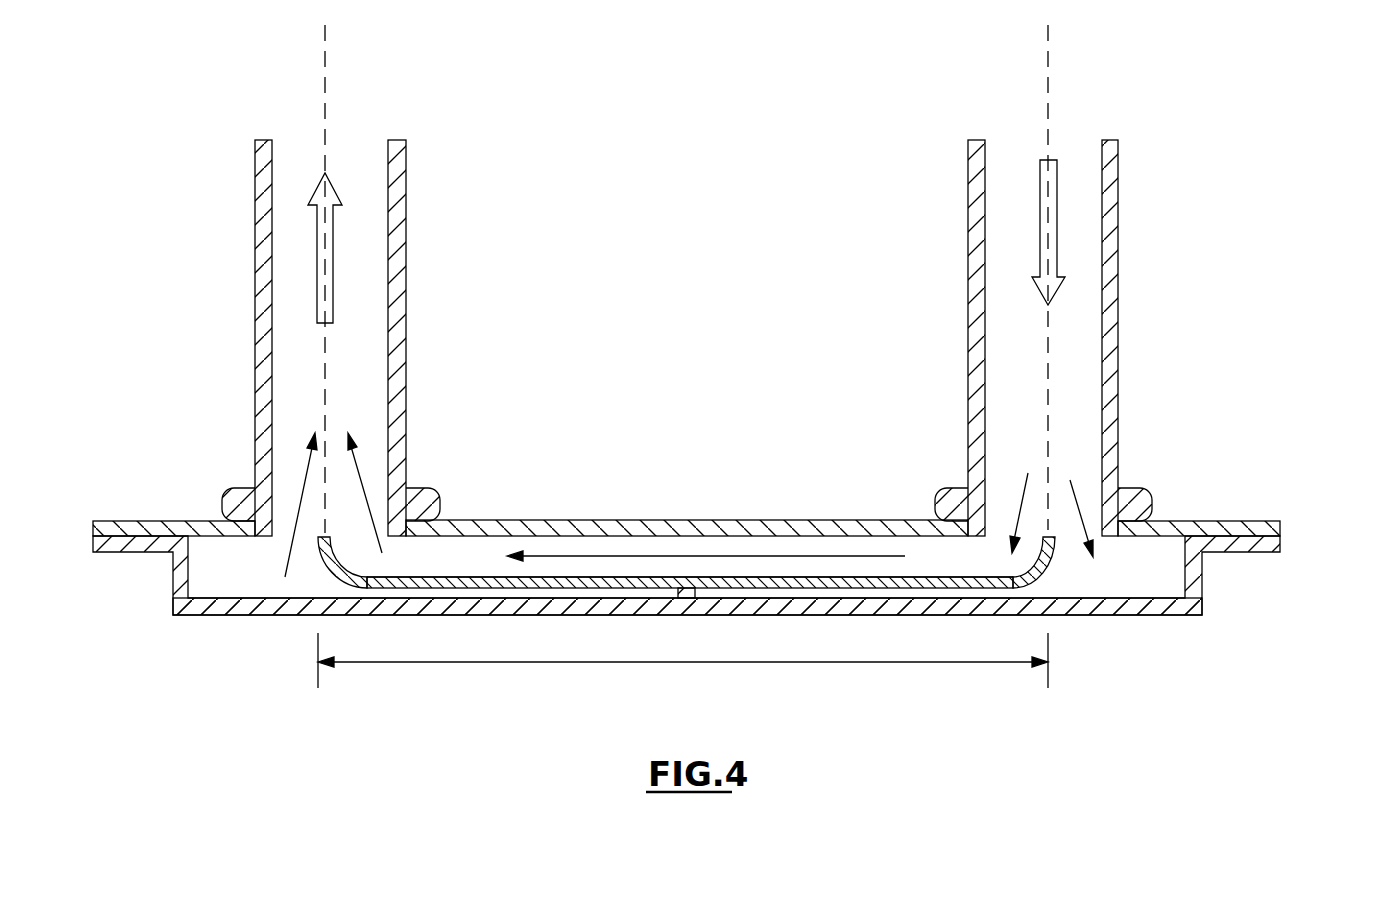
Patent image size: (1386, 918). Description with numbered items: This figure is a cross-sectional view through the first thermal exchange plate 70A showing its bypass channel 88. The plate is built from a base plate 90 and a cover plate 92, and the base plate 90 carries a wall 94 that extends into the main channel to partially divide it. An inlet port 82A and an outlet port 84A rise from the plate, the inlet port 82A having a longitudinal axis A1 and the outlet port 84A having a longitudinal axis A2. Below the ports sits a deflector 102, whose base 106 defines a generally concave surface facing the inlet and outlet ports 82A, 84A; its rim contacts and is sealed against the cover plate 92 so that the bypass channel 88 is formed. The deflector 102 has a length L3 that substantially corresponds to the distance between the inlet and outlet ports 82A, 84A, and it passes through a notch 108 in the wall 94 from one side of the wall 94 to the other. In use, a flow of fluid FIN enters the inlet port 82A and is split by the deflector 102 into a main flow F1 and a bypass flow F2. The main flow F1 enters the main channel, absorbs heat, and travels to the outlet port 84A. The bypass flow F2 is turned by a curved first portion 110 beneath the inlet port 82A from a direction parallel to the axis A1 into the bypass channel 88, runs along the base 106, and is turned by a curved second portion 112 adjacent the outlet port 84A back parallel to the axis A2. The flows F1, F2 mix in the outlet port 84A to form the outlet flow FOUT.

The first thermal exchange plate 70A is at (1290, 405).
The inlet port 82A is at (1118, 340).
The outlet port 84A is at (255, 348).
The bypass channel 88 is at (643, 528).
The base plate 90 is at (1197, 580).
The cover plate 92 is at (772, 525).
The wall 94 is at (687, 598).
The deflector 102 is at (895, 612).
The base 106 is at (800, 588).
The notch 108 is at (687, 577).
The first portion 110 is at (1020, 560).
The second portion 112 is at (352, 563).
The flow of fluid FIN is at (1038, 208).
The outlet flow FOUT is at (333, 275).
The main flow F1 is at (1133, 462).
The bypass flow F2 is at (362, 493).
The longitudinal axis of the inlet port A1 is at (1045, 367).
The longitudinal axis of the outlet port A2 is at (328, 340).
The length of the deflector L3 is at (712, 663).